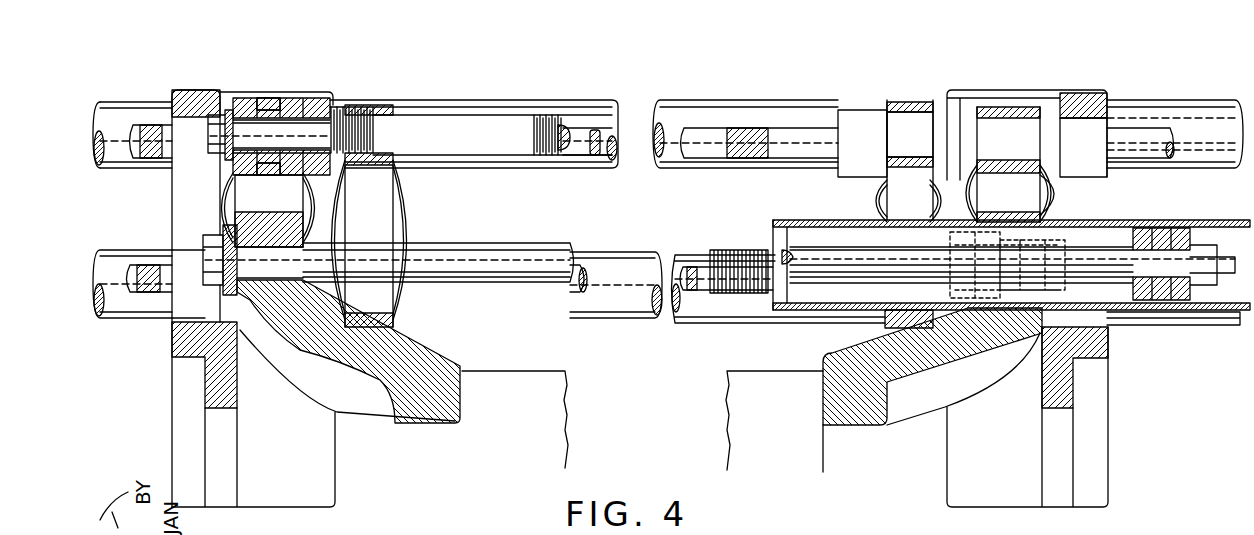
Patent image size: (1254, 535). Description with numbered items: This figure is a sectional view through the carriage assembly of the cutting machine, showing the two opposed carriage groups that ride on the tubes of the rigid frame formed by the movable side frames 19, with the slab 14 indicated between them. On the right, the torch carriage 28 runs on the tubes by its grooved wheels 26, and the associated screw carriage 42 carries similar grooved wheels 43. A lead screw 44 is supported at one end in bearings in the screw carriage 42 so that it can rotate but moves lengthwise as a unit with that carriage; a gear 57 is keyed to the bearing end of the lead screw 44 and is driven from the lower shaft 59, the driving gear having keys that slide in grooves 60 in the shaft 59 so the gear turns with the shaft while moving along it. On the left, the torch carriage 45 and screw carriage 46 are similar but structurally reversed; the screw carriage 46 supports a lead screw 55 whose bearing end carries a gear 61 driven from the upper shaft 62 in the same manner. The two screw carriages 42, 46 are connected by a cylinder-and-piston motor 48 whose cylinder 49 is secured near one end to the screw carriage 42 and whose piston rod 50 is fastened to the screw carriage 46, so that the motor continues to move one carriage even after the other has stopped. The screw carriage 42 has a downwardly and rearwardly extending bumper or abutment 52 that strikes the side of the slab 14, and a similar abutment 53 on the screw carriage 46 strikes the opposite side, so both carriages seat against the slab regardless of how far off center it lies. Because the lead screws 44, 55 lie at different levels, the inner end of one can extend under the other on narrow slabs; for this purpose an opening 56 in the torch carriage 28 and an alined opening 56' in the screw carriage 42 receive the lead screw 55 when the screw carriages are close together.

The slab 14 is at (525, 392).
The movable side frames 19 is at (190, 427).
The grooved wheels 26 is at (880, 206).
The torch carriage 28 is at (905, 100).
The screw carriage 42 is at (1008, 82).
The grooved wheels 43 is at (1060, 195).
The lead screw 44 is at (746, 260).
The torch carriage 45 is at (373, 94).
The screw carriage 46 is at (293, 92).
The cylinder-and-piston motor 48 is at (783, 331).
The cylinder 49 is at (815, 222).
The piston rod 50 is at (480, 246).
The bumper or abutment 52 is at (828, 382).
The bumper or abutment 53 is at (452, 400).
The lead screw 55 is at (535, 130).
The opening 56 is at (887, 155).
The opening 56' is at (1035, 164).
The gear 57 is at (1062, 222).
The shaft 59 is at (148, 262).
The grooves 60 is at (148, 292).
The gear 61 is at (268, 97).
The shaft 62 is at (146, 157).